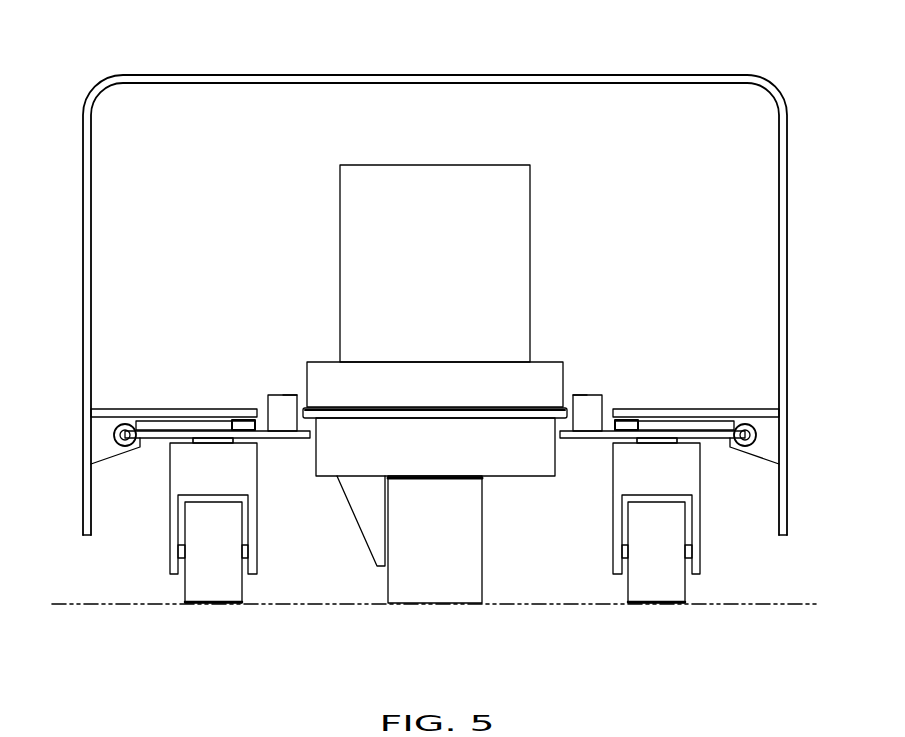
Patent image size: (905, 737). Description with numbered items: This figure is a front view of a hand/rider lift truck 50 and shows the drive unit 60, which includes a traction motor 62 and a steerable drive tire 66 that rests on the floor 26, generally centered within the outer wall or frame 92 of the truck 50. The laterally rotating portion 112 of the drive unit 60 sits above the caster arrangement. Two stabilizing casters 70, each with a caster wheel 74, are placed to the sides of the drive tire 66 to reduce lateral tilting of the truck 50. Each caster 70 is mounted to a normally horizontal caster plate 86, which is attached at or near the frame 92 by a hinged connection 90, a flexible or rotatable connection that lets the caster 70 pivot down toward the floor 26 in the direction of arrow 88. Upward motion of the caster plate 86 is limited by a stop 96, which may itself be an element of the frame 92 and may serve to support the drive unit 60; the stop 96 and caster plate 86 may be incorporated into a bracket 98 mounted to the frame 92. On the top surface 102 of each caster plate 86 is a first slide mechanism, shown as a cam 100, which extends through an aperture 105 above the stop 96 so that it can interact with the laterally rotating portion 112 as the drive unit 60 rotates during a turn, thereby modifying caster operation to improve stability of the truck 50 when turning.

The floor 26 is at (313, 605).
The lift truck 50 is at (437, 273).
The drive unit 60 is at (484, 257).
The traction motor 62 is at (452, 259).
The drive tire 66 is at (462, 567).
The stabilizing caster 70 is at (435, 548).
The caster wheel 74 is at (212, 583).
The caster plate 86 is at (155, 442).
The arrow 88 is at (280, 537).
The hinged connection 90 is at (113, 438).
The frame 92 is at (83, 352).
The stop 96 is at (151, 409).
The bracket 98 is at (60, 433).
The cam 100 is at (283, 395).
The top surface 102 is at (563, 408).
The aperture 105 is at (262, 393).
The laterally rotating portion 112 is at (332, 382).